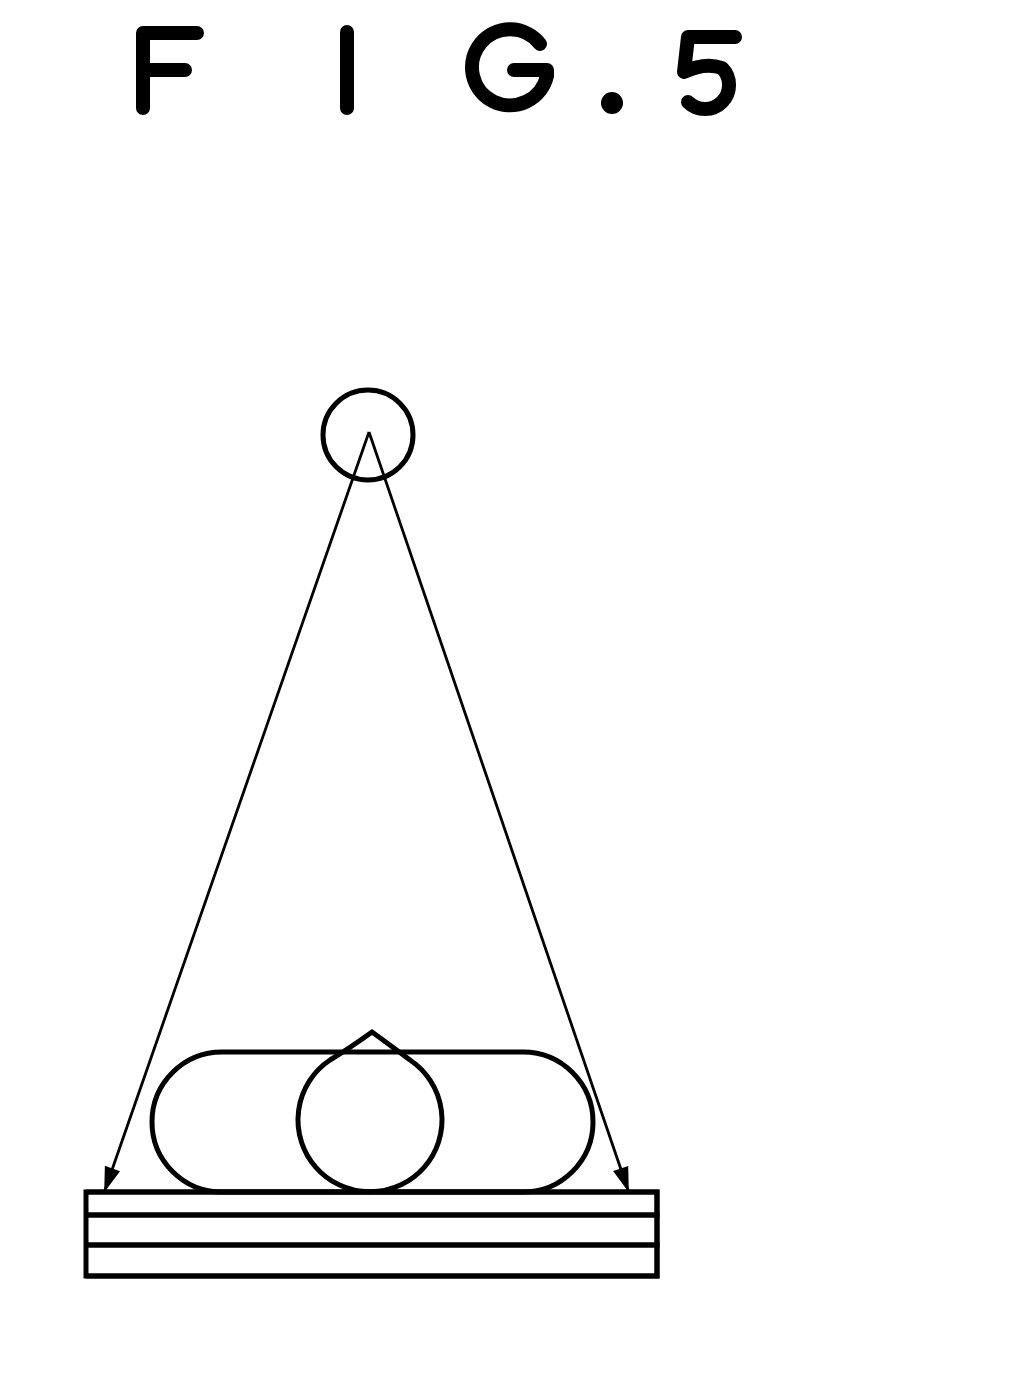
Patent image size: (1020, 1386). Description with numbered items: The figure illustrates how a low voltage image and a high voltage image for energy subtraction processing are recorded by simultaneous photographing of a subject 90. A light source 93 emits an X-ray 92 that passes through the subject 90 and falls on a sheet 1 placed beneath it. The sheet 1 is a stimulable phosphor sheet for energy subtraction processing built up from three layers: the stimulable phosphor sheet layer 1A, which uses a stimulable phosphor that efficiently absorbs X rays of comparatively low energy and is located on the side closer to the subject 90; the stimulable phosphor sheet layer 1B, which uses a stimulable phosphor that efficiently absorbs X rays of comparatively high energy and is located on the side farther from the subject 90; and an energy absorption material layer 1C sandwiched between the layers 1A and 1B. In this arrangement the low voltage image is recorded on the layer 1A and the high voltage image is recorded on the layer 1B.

The light source 93 is at (395, 432).
The X-ray 92 is at (532, 918).
The subject 90 is at (557, 1103).
The sheet 1 is at (481, 1228).
The stimulable phosphor sheet layer 1A is at (657, 1202).
The energy absorption material layer 1C is at (657, 1228).
The stimulable phosphor sheet layer 1B is at (431, 1279).